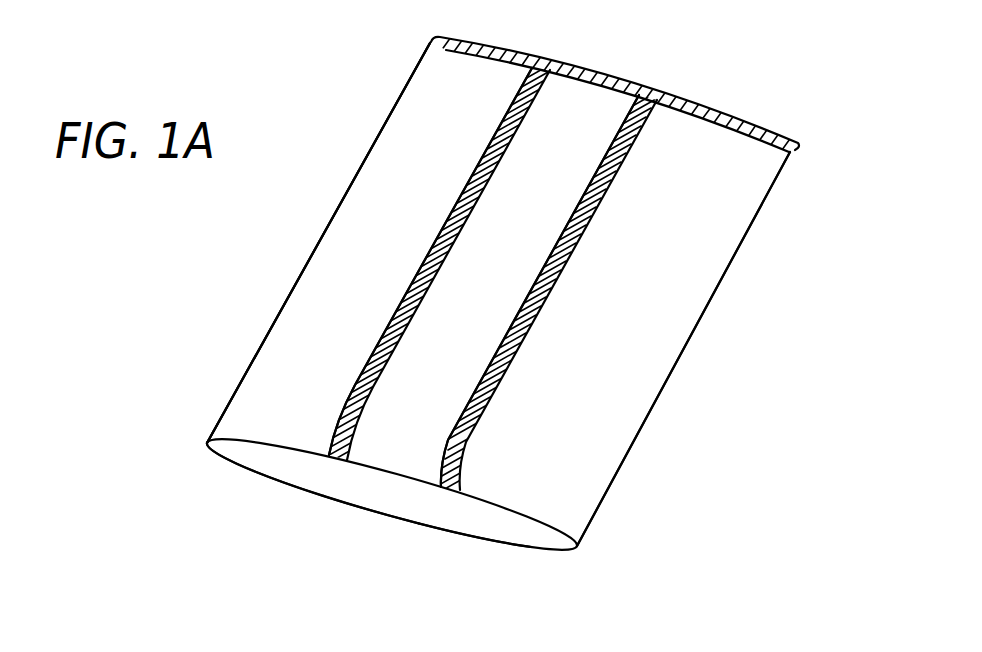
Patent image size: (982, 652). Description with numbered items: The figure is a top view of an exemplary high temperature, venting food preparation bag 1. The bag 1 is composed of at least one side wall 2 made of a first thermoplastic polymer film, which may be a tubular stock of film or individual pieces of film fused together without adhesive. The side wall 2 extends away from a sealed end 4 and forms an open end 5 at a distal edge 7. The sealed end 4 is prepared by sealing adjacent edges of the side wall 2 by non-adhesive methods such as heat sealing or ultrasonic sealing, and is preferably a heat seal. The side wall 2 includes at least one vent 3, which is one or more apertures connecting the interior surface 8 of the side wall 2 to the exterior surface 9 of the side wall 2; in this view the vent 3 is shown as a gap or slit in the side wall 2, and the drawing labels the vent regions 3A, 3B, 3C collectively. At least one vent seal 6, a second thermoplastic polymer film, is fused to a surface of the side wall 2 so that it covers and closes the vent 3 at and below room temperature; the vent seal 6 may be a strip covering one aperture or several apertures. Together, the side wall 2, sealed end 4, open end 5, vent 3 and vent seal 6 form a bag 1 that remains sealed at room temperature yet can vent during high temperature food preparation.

The food preparation bag 1 is at (331, 168).
The side wall 2 is at (283, 387).
The vent 3 is at (487, 332).
The first chamber 3A is at (303, 227).
The second chamber 3B is at (730, 362).
The third chamber 3C is at (717, 349).
The sealed end 4 is at (507, 43).
The open end 5 is at (507, 527).
The vent seal 6 is at (515, 272).
The distal edge 7 is at (278, 480).
The interior surface 8 is at (350, 483).
The exterior surface 9 is at (477, 482).